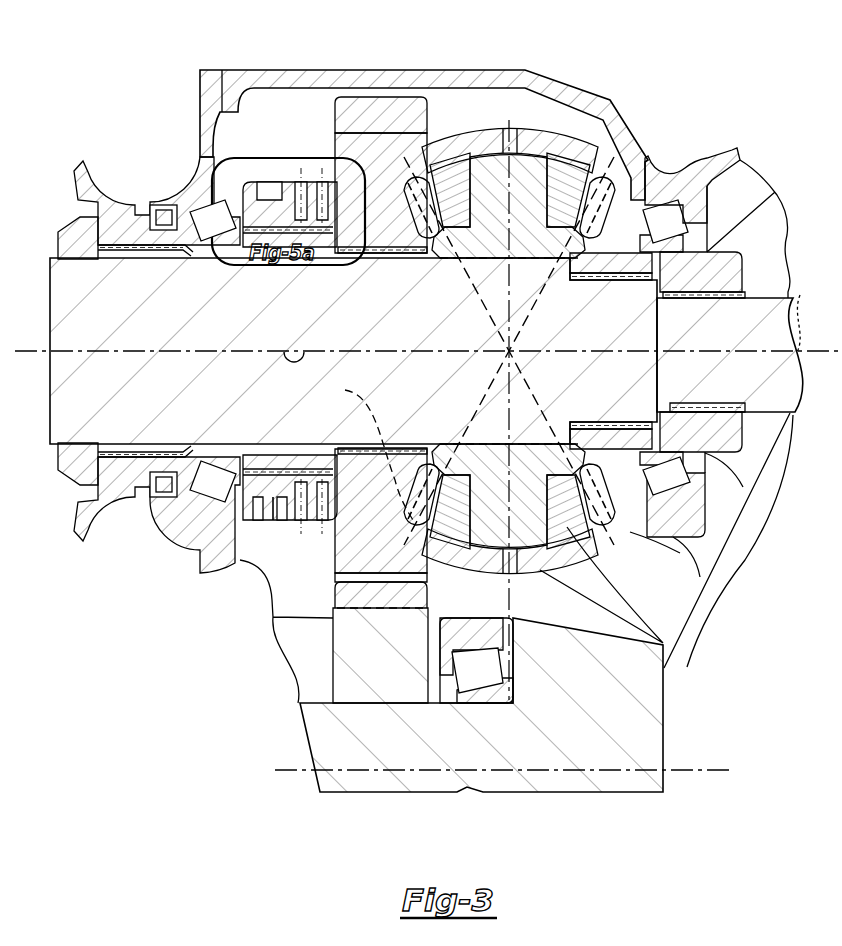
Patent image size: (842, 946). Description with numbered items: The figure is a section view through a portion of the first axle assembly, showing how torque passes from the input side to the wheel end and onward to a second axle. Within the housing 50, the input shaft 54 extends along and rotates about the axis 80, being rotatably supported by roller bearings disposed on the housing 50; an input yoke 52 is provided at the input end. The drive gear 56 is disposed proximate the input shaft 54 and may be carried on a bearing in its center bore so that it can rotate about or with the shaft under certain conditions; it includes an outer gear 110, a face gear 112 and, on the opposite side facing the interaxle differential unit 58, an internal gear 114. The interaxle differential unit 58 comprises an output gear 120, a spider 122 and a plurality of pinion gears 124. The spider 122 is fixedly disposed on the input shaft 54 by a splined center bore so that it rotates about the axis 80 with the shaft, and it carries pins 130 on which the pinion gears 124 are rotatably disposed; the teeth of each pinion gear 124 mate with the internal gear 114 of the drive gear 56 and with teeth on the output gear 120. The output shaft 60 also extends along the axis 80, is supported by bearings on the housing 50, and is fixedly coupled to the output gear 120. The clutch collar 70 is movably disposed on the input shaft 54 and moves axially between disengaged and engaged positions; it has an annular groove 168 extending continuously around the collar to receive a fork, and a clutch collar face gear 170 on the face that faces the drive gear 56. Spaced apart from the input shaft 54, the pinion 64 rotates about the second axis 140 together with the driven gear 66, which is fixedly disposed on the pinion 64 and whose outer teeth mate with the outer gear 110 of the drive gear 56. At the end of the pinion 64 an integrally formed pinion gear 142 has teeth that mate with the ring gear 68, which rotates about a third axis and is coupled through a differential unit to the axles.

The housing 50 is at (233, 70).
The input yoke 52 is at (78, 501).
The input shaft 54 is at (330, 321).
The drive gear 56 is at (333, 132).
The interaxle differential unit 58 is at (571, 141).
The output shaft 60 is at (766, 329).
The pinion 64 is at (280, 745).
The driven gear 66 is at (273, 618).
The ring gear 68 is at (655, 597).
The clutch collar 70 is at (250, 182).
The axis 80 is at (295, 360).
The outer gear 110 is at (377, 102).
The face gear 112 is at (313, 522).
The internal gear 114 is at (362, 449).
The output gear 120 is at (625, 174).
The spider 122 is at (527, 158).
The pinion gear 124 is at (452, 160).
The pin 130 is at (585, 185).
The second axis 140 is at (522, 772).
The pinion gear 142 is at (548, 625).
The annular groove 168 is at (275, 500).
The clutch collar face gear 170 is at (283, 515).